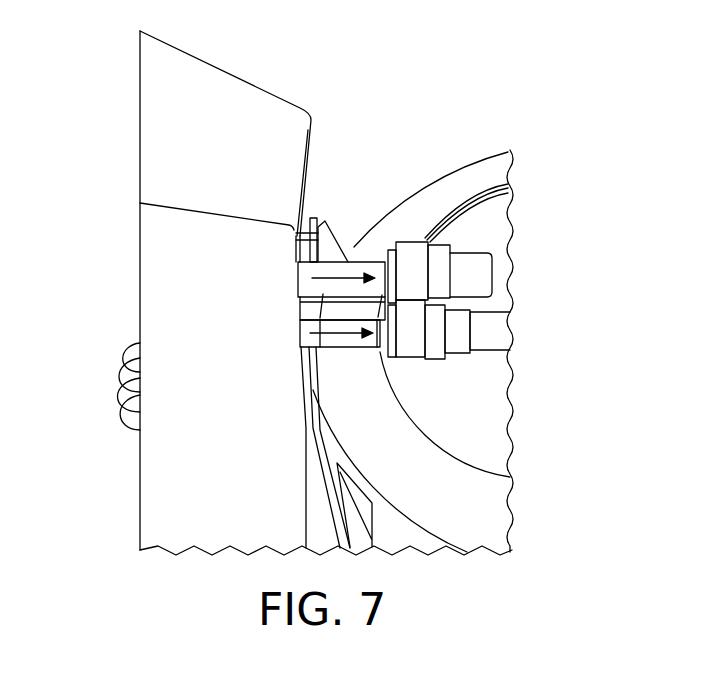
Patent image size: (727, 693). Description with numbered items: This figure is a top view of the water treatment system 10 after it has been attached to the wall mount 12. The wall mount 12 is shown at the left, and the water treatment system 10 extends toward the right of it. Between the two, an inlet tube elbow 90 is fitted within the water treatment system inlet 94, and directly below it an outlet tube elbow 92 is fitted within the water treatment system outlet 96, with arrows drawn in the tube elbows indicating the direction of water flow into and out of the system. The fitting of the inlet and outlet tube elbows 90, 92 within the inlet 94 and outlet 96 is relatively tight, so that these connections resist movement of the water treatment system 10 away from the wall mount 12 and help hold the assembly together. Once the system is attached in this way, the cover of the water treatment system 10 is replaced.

The water treatment system 10 is at (490, 502).
The wall mount 12 is at (172, 253).
The inlet tube elbow 90 is at (363, 262).
The outlet tube elbow 92 is at (342, 340).
The water treatment system inlet 94 is at (482, 275).
The water treatment system outlet 96 is at (498, 337).